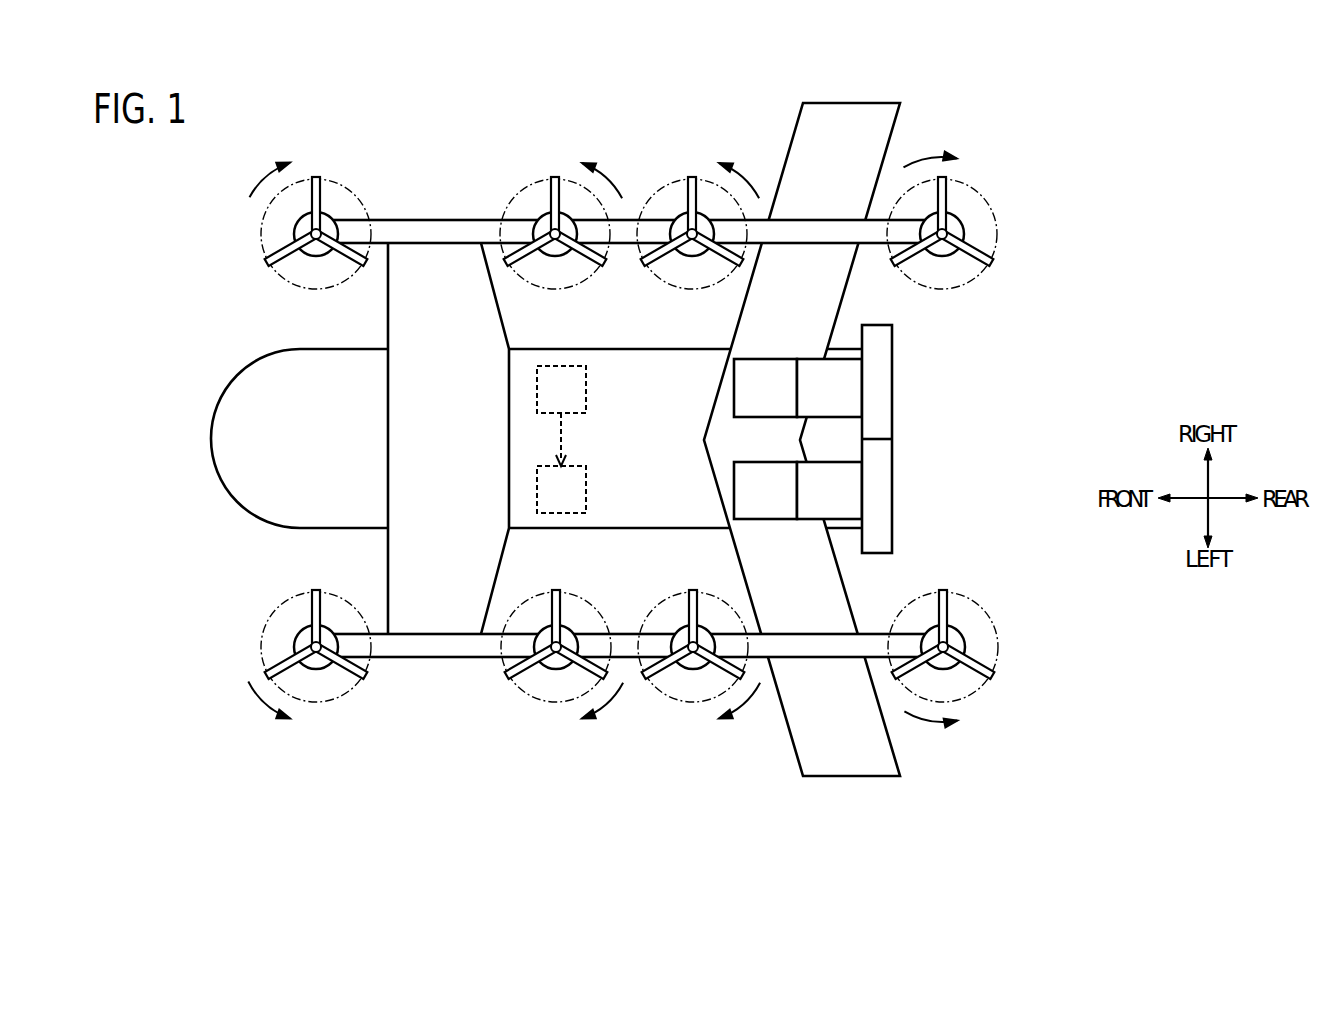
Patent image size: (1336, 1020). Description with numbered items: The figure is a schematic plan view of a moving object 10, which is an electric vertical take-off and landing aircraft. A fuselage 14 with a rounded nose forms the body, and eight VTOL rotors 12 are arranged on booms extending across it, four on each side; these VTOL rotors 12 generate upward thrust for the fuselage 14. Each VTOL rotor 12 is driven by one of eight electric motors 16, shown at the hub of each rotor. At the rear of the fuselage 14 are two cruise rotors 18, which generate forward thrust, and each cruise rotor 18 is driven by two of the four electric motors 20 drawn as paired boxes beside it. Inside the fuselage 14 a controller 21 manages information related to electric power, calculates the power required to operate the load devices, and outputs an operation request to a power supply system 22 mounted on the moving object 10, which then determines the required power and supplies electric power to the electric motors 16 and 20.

The moving object 10 is at (133, 194).
The VTOL rotor 12 is at (316, 176).
The fuselage 14 is at (218, 408).
The electric motor 16 is at (315, 257).
The cruise rotor 18 is at (893, 372).
The electric motor 20 is at (750, 392).
The controller 21 is at (537, 390).
The power supply system 22 is at (537, 493).